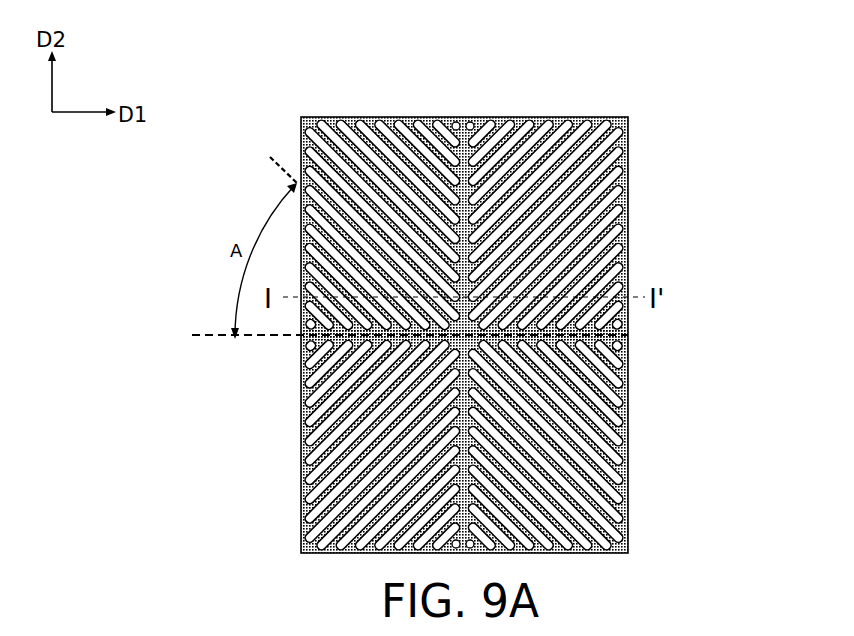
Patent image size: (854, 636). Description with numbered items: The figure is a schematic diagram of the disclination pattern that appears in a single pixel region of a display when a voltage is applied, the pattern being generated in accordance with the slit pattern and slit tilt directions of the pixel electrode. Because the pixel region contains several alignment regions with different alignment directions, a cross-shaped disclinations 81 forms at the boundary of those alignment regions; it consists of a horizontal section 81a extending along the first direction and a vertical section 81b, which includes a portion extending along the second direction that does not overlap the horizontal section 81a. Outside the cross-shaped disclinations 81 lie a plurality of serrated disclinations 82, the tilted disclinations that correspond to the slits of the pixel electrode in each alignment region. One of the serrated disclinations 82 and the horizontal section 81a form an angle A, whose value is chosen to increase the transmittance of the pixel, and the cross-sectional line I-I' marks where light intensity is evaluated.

The cross-shaped disclinations 81 is at (605, 21).
The horizontal section 81a is at (628, 333).
The vertical section 81b is at (466, 118).
The serrated disclinations 82 is at (300, 160).